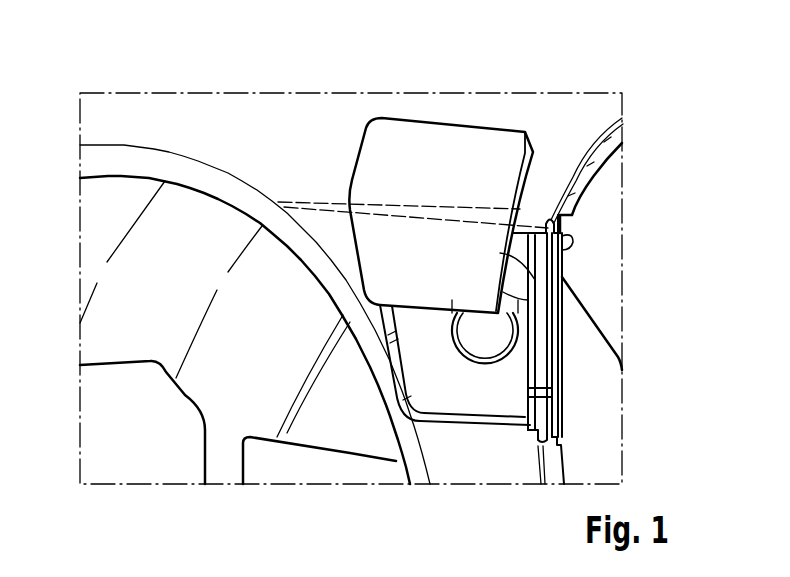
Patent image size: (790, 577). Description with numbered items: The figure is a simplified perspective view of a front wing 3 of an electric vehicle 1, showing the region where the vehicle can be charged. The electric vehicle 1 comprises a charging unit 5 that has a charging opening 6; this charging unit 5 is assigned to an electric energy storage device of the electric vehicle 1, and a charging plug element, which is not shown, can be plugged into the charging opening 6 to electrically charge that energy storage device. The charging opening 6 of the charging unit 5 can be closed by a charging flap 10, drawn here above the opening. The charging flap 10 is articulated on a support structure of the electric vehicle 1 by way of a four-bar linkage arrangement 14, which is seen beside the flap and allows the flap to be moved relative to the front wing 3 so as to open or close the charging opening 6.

The electric vehicle 1 is at (248, 93).
The front wing 3 is at (570, 125).
The charging unit 5 is at (490, 367).
The charging opening 6 is at (483, 336).
The charging flap 10 is at (455, 160).
The four-bar linkage arrangement 14 is at (575, 257).